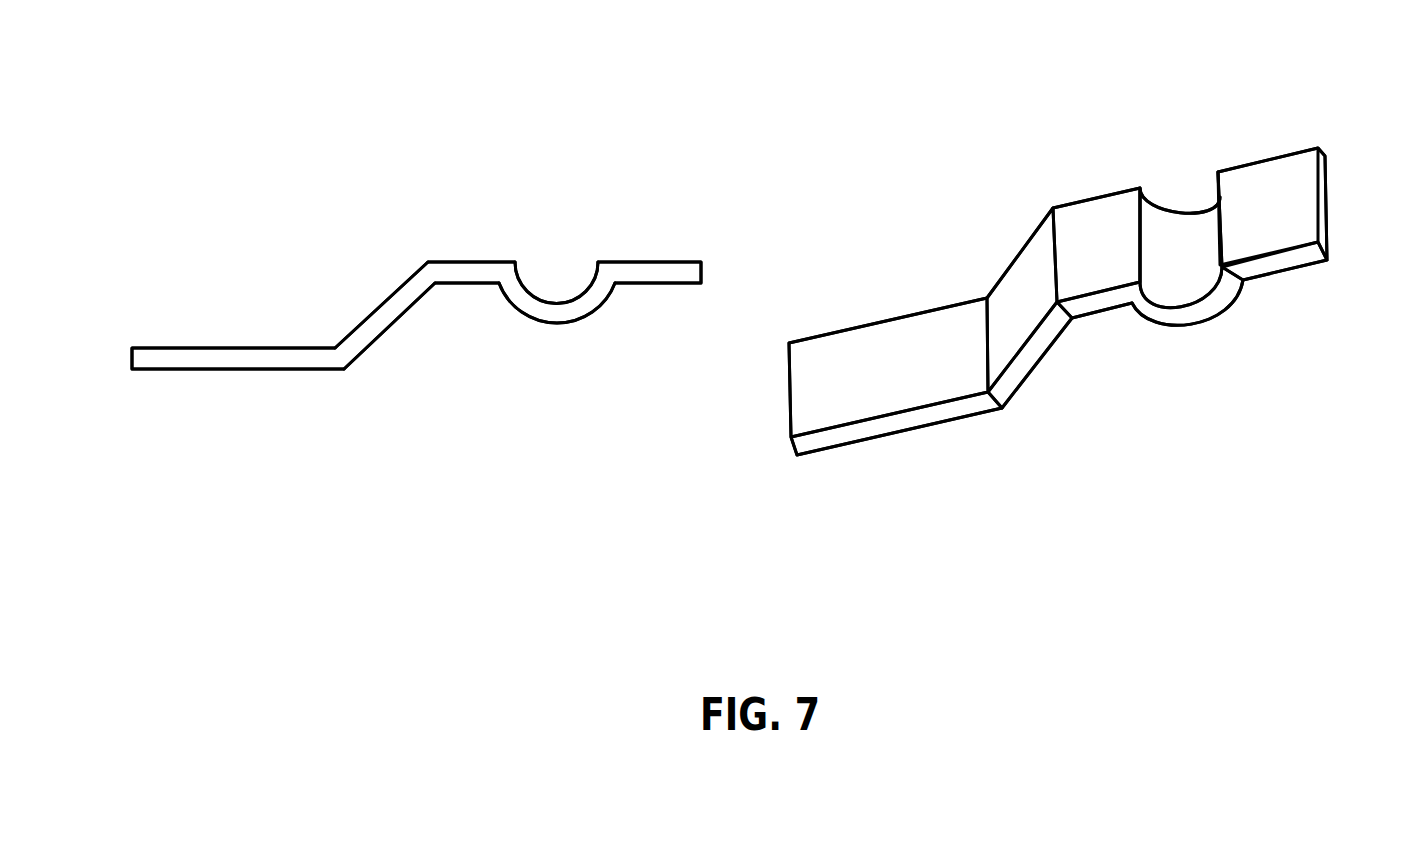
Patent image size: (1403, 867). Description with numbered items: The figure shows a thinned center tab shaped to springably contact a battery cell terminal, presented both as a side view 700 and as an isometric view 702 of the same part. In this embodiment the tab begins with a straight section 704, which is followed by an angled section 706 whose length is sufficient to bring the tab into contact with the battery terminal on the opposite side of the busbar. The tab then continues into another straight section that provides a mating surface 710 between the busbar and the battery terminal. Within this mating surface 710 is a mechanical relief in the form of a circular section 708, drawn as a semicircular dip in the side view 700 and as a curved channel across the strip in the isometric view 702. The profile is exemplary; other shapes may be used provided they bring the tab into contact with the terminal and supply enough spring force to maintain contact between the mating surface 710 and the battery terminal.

The side view 700 is at (690, 152).
The isometric view 702 is at (1343, 142).
The straight section 704 is at (183, 369).
The angled section 706 is at (395, 323).
The circular section 708 is at (565, 323).
The mating surface 710 is at (612, 262).